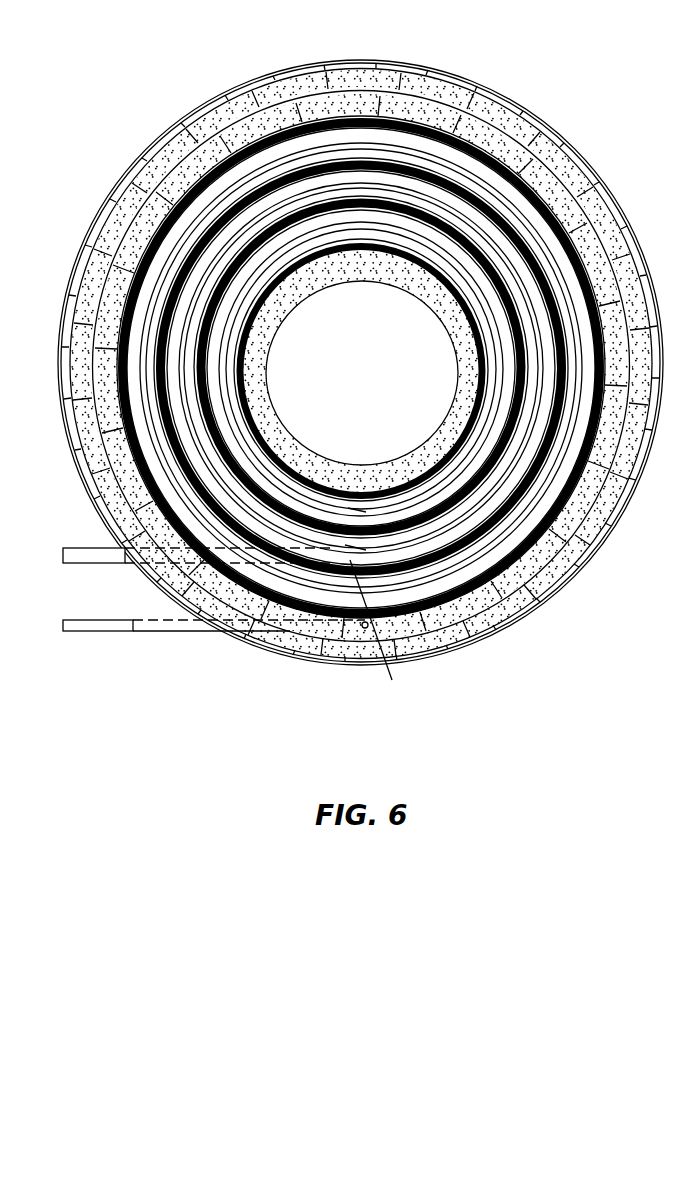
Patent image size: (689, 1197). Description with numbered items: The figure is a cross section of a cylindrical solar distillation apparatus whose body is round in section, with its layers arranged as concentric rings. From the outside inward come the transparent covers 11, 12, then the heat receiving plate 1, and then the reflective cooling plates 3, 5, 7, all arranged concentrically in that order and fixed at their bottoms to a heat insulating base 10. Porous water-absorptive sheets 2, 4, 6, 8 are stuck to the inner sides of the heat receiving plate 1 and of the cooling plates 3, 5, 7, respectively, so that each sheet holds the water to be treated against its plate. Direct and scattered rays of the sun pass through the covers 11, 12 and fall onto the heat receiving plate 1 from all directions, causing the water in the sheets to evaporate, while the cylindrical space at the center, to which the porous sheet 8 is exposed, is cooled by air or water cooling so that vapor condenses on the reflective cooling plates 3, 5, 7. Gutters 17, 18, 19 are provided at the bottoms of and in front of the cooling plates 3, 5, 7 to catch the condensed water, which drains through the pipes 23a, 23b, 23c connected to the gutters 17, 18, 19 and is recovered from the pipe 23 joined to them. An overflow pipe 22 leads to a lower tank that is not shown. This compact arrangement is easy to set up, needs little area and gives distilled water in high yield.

The heat receiving plate 1 is at (467, 593).
The porous water-absorptive sheet 2 is at (268, 133).
The reflective cooling plate 3 is at (487, 533).
The porous water-absorptive sheet 4 is at (313, 168).
The reflective cooling plate 5 is at (505, 470).
The porous water-absorptive sheet 6 is at (368, 197).
The reflective cooling plate 7 is at (482, 383).
The porous water-absorptive sheet 8 is at (400, 248).
The heat insulating base 10 is at (463, 78).
The transparent cover 11 is at (160, 140).
The transparent cover 12 is at (205, 142).
The gutter 17 is at (160, 277).
The gutter 18 is at (207, 277).
The gutter 19 is at (260, 268).
The overflow pipe 22 is at (83, 627).
The pipe 23 is at (72, 560).
The pipe 23a is at (392, 680).
The pipe 23b is at (366, 550).
The pipe 23c is at (366, 512).